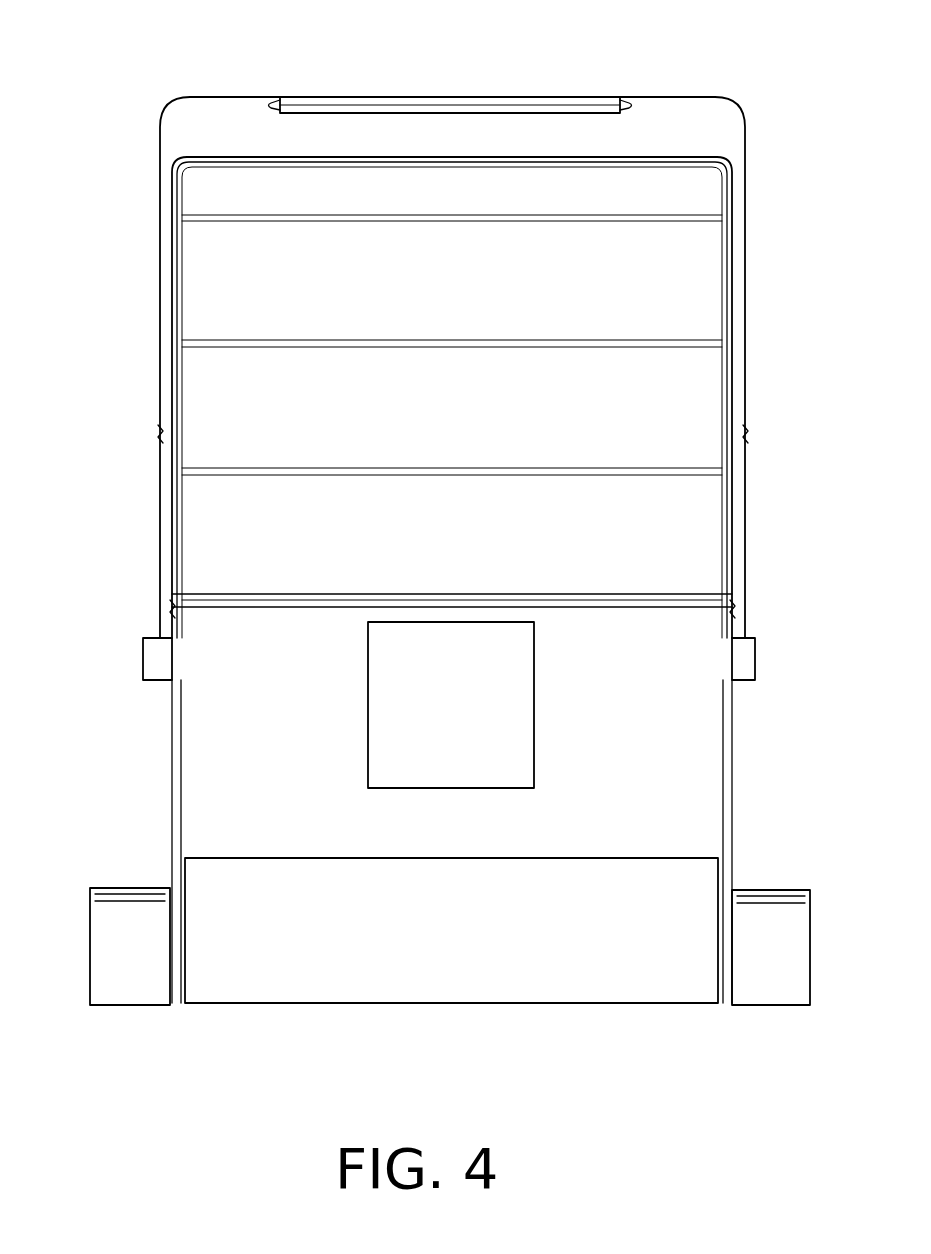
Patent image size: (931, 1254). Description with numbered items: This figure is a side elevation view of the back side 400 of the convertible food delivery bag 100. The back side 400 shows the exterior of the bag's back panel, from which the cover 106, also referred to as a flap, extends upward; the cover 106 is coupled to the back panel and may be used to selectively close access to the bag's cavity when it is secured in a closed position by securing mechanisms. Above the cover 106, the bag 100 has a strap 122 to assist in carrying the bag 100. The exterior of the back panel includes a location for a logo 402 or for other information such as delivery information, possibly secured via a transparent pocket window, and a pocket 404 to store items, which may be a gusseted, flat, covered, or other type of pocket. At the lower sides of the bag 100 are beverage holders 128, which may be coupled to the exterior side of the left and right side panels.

The back side 400 is at (147, 33).
The convertible food delivery bag 100 is at (115, 487).
The strap 122 is at (183, 100).
The cover 106 is at (195, 303).
The logo 402 is at (415, 698).
The pocket 404 is at (415, 858).
The beverage holder 128 is at (113, 888).